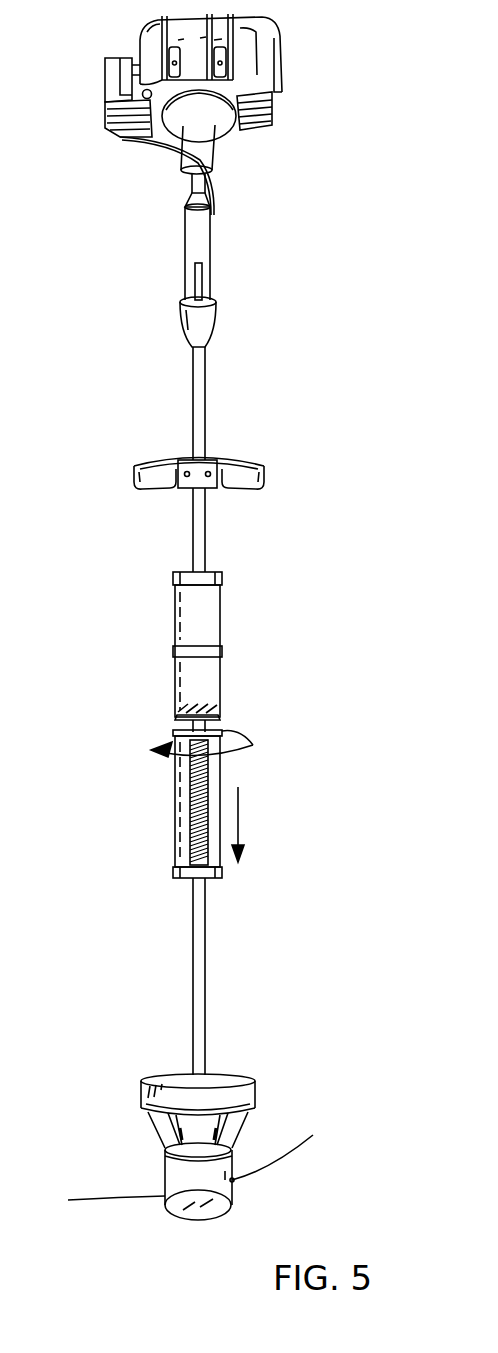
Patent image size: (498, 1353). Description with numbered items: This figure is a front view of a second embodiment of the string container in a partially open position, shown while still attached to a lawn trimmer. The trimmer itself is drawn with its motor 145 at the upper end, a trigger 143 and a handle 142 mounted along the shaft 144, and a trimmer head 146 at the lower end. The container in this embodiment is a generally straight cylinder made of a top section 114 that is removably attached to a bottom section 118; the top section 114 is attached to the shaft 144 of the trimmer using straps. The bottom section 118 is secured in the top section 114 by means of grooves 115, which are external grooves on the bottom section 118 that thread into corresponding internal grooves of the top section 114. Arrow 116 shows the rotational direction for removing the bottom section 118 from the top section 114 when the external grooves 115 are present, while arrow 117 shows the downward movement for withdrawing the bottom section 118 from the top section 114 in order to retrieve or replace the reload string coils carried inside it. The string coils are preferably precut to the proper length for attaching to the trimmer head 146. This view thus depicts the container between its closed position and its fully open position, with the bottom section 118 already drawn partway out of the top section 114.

The motor 145 is at (278, 62).
The trigger 143 is at (182, 318).
The shaft/pole 144 is at (204, 958).
The handle 142 is at (133, 470).
The top section 114 is at (175, 600).
The grooves 115 is at (187, 828).
The bottom section 118 is at (175, 800).
The arrow 116 is at (253, 745).
The arrow 117 is at (240, 807).
The trimmer head 146 is at (197, 1223).